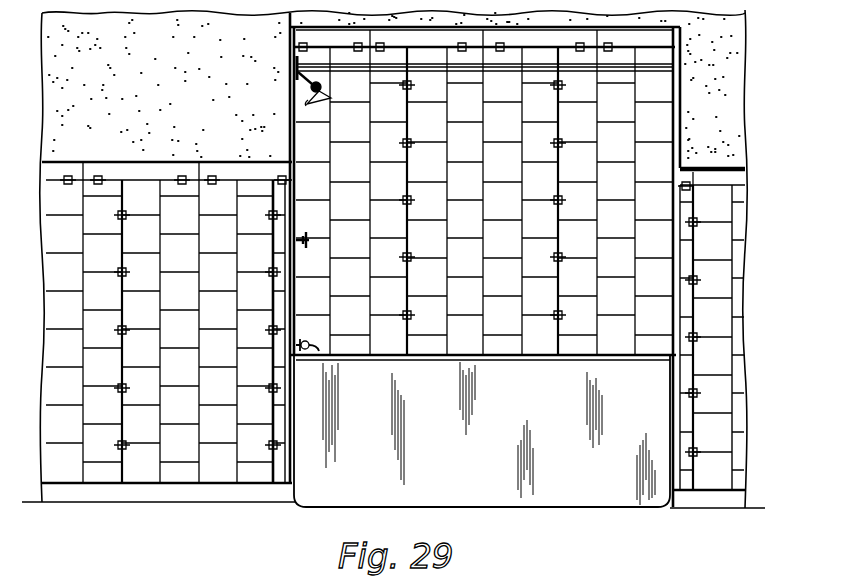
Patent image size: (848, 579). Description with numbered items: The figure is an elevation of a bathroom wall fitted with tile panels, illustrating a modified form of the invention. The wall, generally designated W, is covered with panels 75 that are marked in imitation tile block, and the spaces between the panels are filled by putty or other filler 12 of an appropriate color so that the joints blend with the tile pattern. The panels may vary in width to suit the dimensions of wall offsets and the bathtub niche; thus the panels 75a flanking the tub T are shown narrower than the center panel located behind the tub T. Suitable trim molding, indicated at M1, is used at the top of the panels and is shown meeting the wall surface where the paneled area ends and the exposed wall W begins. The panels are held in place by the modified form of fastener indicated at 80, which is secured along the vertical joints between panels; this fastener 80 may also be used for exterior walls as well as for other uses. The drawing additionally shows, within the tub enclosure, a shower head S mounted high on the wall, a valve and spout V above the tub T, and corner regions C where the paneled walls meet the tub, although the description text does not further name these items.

The putty or other filler 12 is at (122, 459).
The panels 75 is at (228, 192).
The panels 75a is at (484, 201).
The fastener 80 is at (410, 201).
The wall W is at (752, 135).
The trim molding M1 is at (183, 162).
The shower head S is at (314, 92).
The valve / spout V is at (306, 340).
The tub T is at (483, 431).
The corner C is at (284, 421).